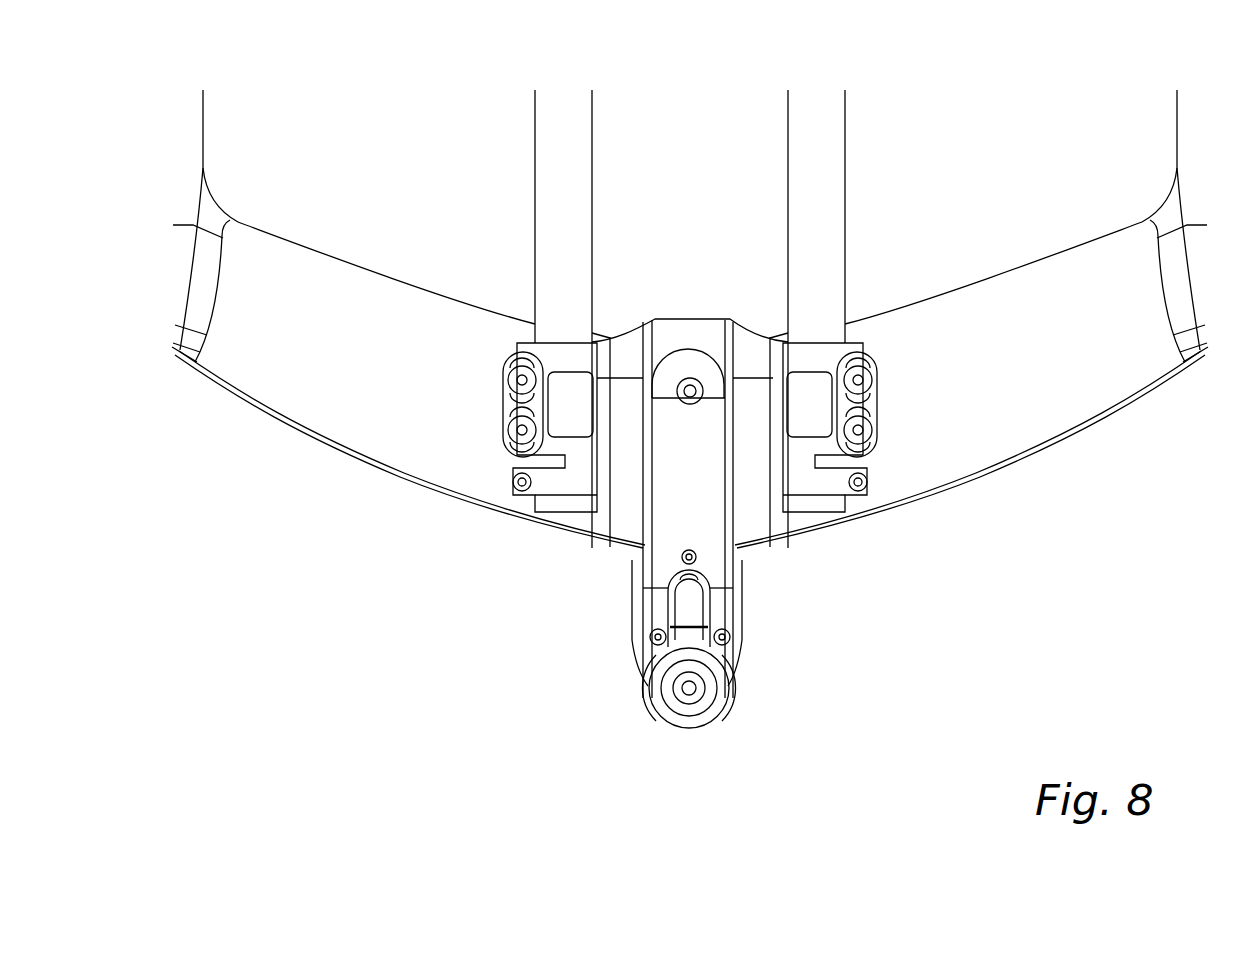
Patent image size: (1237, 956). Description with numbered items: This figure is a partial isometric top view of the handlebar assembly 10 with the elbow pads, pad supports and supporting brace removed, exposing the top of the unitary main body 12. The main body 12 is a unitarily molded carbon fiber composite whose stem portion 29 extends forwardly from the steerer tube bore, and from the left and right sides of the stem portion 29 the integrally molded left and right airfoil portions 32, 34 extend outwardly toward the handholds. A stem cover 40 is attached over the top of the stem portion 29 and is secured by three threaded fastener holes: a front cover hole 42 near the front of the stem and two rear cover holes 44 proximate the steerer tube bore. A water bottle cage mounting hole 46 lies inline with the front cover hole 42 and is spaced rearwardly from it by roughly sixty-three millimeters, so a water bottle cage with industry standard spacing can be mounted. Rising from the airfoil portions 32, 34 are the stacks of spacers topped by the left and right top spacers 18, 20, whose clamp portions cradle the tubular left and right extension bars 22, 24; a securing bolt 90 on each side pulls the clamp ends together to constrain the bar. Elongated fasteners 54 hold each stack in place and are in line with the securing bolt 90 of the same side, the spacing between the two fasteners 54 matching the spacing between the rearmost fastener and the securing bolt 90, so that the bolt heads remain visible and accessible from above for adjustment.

The handlebar assembly 10 is at (330, 727).
The unitary main body 12 is at (690, 319).
The left top spacer 18 is at (580, 358).
The right top spacer 20 is at (803, 353).
The left extension bar 22 is at (555, 158).
The right extension bar 24 is at (815, 148).
The stem portion 29 is at (620, 575).
The left airfoil portion 32 is at (230, 378).
The right airfoil portion 34 is at (1123, 378).
The stem cover 40 is at (697, 562).
The front cover hole 42 is at (692, 386).
The rear cover holes 44 is at (652, 646).
The water bottle cage mounting hole 46 is at (713, 562).
The fasteners 54 is at (508, 363).
The securing bolt 90 is at (522, 493).